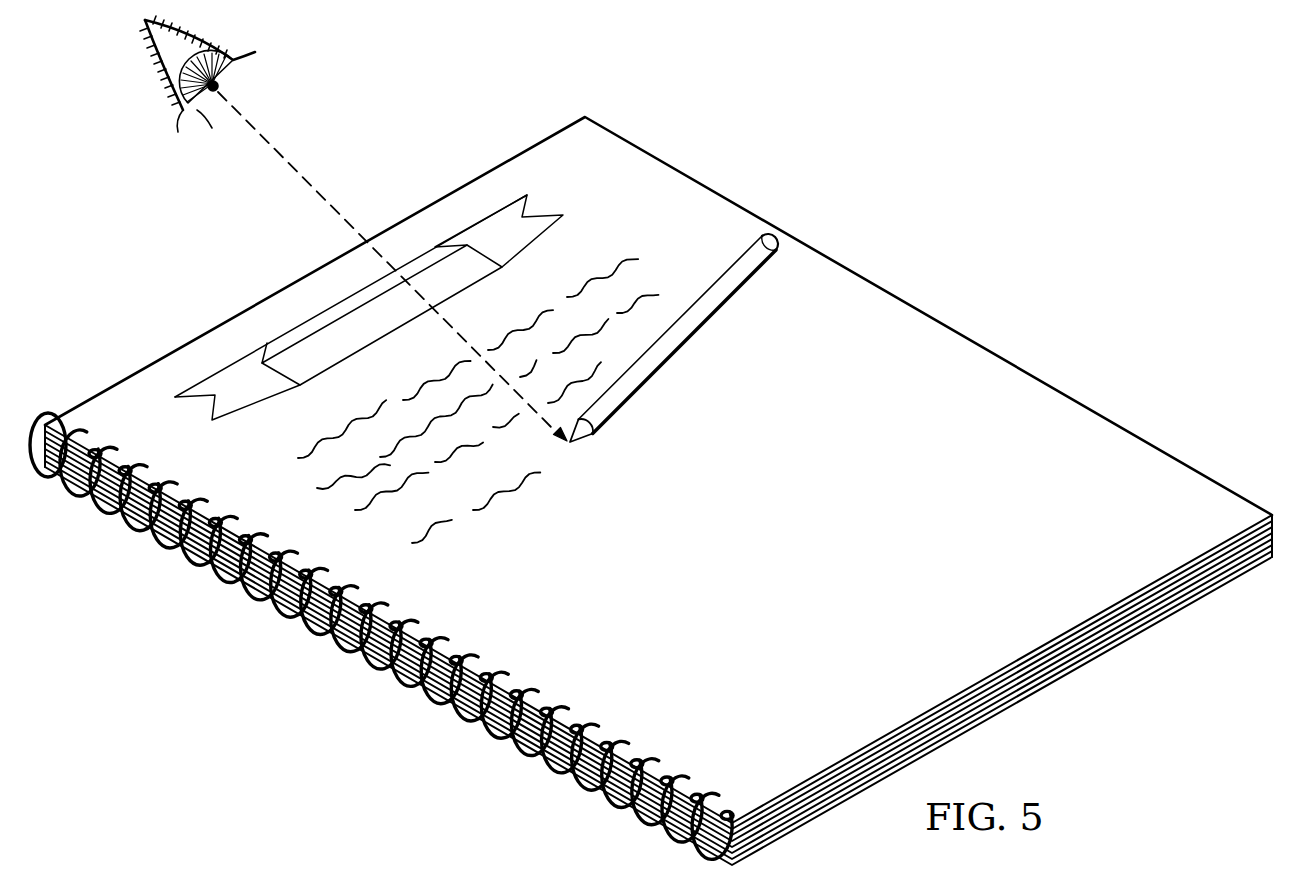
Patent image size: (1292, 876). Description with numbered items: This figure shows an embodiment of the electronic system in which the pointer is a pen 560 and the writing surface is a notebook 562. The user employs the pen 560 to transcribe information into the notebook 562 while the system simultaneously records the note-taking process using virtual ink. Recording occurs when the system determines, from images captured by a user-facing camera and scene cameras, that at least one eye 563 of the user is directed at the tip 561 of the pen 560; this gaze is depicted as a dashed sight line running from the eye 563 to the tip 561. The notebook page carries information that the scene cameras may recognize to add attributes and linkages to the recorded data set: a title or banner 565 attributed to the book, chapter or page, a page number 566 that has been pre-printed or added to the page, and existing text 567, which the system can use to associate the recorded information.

The pen 560 is at (658, 370).
The tip 561 is at (570, 447).
The notebook 562 is at (350, 710).
The eye 563 is at (197, 89).
The title or banner 565 is at (322, 343).
The page number 566 is at (597, 148).
The existing text 567 is at (286, 460).